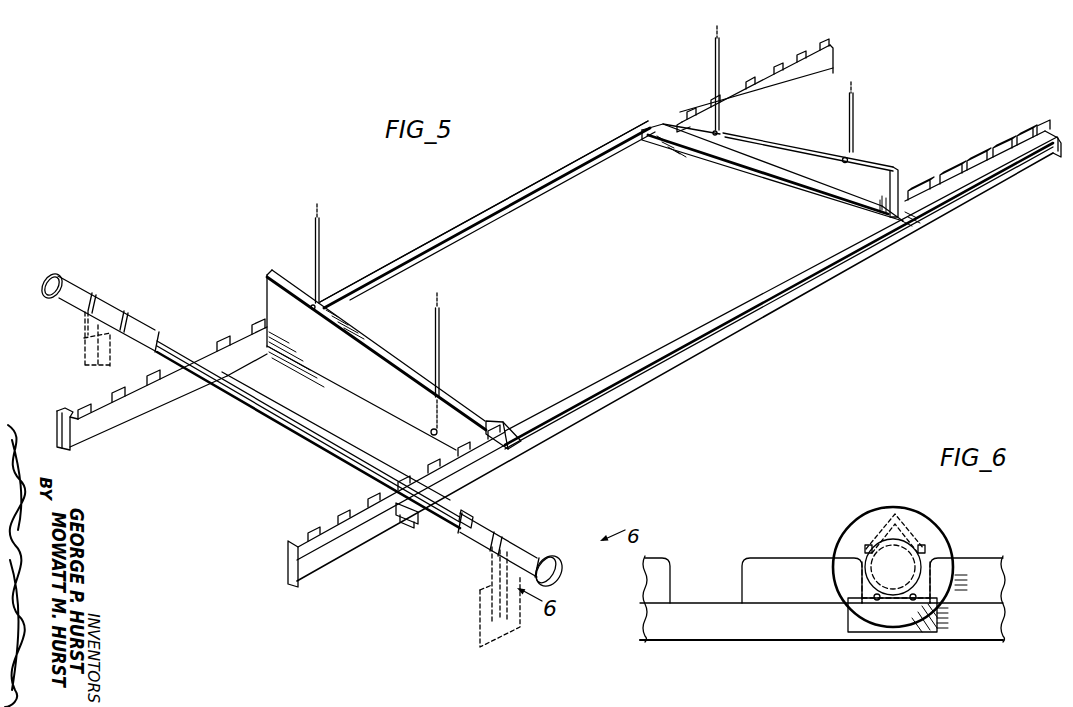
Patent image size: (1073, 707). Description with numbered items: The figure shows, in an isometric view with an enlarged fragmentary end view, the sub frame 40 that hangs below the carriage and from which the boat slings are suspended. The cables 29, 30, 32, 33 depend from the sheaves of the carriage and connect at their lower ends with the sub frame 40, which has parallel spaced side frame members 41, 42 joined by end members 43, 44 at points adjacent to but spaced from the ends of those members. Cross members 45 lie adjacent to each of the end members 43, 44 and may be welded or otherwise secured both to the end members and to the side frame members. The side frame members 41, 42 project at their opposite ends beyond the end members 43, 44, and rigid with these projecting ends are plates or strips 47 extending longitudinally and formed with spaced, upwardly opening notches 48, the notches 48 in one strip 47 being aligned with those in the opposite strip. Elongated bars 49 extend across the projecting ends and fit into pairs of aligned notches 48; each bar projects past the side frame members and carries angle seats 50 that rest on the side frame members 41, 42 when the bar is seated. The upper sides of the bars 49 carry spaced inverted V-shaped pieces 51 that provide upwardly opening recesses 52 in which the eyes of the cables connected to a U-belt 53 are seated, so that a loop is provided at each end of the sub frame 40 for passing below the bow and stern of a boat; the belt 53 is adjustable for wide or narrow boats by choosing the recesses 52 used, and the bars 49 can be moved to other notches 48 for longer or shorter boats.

In FIG. 5, the cable 29 is at (722, 48).
In FIG. 5, the cable 30 is at (320, 238).
In FIG. 5, the cable 32 is at (853, 110).
In FIG. 5, the cable 33 is at (441, 343).
In FIG. 5, the sub frame 40 is at (574, 162).
In FIG. 5, the side frame member 41 is at (455, 227).
In FIG. 5, the side frame member 42 is at (758, 302).
In FIG. 6, the side frame member 42 is at (760, 630).
In FIG. 5, the end member 43 is at (858, 167).
In FIG. 5, the end member 44 is at (355, 338).
In FIG. 5, the cross member 45 is at (492, 404).
In FIG. 5, the plate or strip 47 is at (105, 421).
In FIG. 6, the plate or strip 47 is at (788, 568).
In FIG. 5, the notch 48 is at (223, 338).
In FIG. 6, the notch 48 is at (701, 580).
In FIG. 5, the elongated bar 49 is at (286, 419).
In FIG. 6, the elongated bar 49 is at (927, 562).
In FIG. 5, the angle seat 50 is at (413, 524).
In FIG. 6, the angle seat 50 is at (925, 627).
In FIG. 5, the inverted V-shaped piece 51 is at (502, 523).
In FIG. 6, the inverted V-shaped piece 51 is at (897, 527).
In FIG. 5, the recess 52 is at (482, 508).
In FIG. 5, the U-belt 53 is at (84, 356).